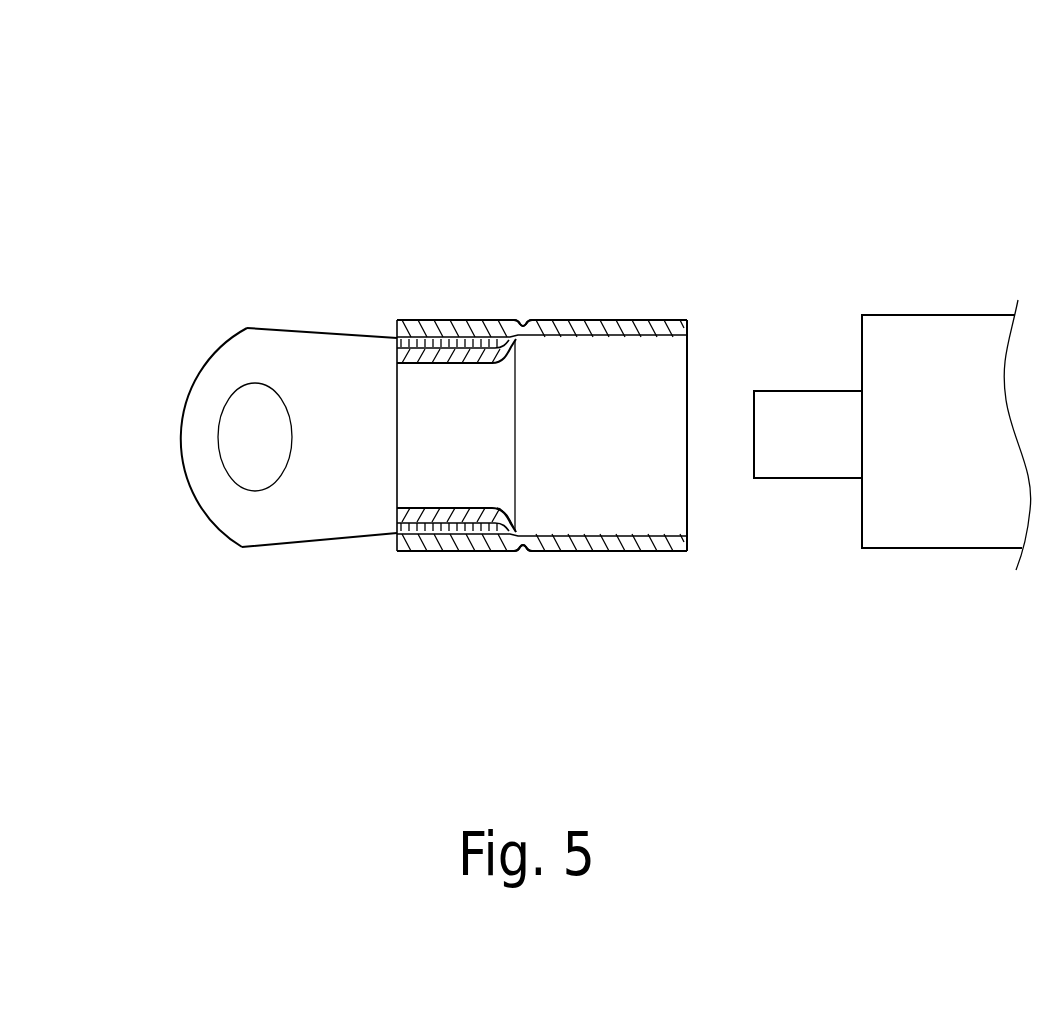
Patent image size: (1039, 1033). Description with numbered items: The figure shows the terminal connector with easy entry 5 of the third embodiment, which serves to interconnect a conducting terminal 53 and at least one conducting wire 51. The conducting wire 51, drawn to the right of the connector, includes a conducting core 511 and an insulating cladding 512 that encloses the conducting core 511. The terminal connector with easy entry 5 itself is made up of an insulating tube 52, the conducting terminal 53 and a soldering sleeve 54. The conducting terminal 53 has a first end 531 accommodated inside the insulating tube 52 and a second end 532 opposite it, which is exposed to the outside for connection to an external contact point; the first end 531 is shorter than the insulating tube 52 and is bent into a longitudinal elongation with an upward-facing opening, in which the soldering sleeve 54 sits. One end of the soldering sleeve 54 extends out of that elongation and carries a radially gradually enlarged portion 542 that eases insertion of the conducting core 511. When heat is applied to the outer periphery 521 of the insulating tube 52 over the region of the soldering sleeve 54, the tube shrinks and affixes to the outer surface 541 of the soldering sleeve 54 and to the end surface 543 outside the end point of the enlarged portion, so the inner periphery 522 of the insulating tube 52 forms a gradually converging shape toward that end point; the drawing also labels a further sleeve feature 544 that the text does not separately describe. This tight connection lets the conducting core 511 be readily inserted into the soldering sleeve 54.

The terminal connector with easy entry 5 is at (160, 115).
The conducting wire 51 is at (780, 113).
The conducting core 511 is at (823, 430).
The insulating cladding 512 is at (933, 350).
The insulating tube 52 is at (628, 317).
The outer periphery of the insulating tube 521 is at (437, 318).
The inner periphery of the insulating tube 522 is at (395, 333).
The first end 531 is at (473, 317).
The conducting terminal 53 is at (262, 328).
The second end 532 is at (200, 427).
The soldering sleeve 54 is at (397, 553).
The outer surface of the soldering sleeve 541 is at (490, 540).
The radially gradually enlarged portion 542 is at (518, 540).
The end surface 543 is at (520, 548).
The sleeve inner layer 544 is at (447, 545).